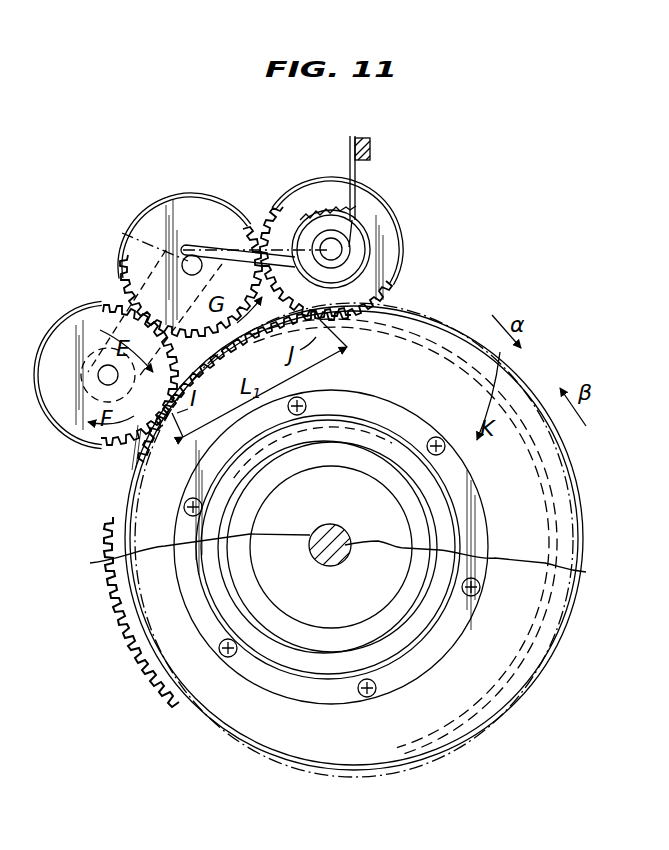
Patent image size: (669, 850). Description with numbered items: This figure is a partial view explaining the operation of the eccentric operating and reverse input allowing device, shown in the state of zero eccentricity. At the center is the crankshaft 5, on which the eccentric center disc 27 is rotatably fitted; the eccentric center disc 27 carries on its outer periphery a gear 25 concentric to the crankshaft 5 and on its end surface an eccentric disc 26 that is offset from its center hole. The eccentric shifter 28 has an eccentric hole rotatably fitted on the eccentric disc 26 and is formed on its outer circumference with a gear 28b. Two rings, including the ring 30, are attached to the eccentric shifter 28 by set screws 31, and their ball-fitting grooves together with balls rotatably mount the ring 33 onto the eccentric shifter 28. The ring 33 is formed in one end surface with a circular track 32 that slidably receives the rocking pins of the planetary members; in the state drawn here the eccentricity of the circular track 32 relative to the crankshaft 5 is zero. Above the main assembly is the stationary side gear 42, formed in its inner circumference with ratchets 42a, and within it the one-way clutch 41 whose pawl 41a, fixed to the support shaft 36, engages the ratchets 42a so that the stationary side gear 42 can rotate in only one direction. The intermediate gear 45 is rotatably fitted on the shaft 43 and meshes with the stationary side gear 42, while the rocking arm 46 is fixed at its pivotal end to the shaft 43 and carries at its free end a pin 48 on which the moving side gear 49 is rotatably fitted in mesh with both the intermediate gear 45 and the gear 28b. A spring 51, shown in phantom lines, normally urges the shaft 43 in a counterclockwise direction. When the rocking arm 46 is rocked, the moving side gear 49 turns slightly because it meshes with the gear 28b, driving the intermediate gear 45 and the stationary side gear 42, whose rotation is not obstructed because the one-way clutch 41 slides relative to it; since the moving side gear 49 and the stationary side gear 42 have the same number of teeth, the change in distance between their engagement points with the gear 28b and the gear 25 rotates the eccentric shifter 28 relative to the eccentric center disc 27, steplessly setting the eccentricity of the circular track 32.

The crankshaft 5 is at (595, 572).
The gear 25 is at (125, 628).
The eccentric disc 26 is at (321, 557).
The eccentric center disc 27 is at (150, 676).
The eccentric shifter 28 is at (520, 665).
The gear 28b is at (123, 457).
The ring 30 is at (432, 665).
The set screws 31 is at (378, 696).
The circular track 32 is at (277, 655).
The ring 33 is at (303, 678).
The support shaft 36 is at (333, 251).
The one-way clutch 41 is at (358, 241).
The pawl 41a is at (336, 212).
The stationary side gear 42 is at (298, 187).
The ratchets 42a is at (318, 206).
The shaft 43 is at (167, 253).
The intermediate gear 45 is at (183, 194).
The rocking arm 46 is at (153, 273).
The pin 48 is at (100, 367).
The moving side gear 49 is at (46, 400).
The spring 51 is at (222, 250).